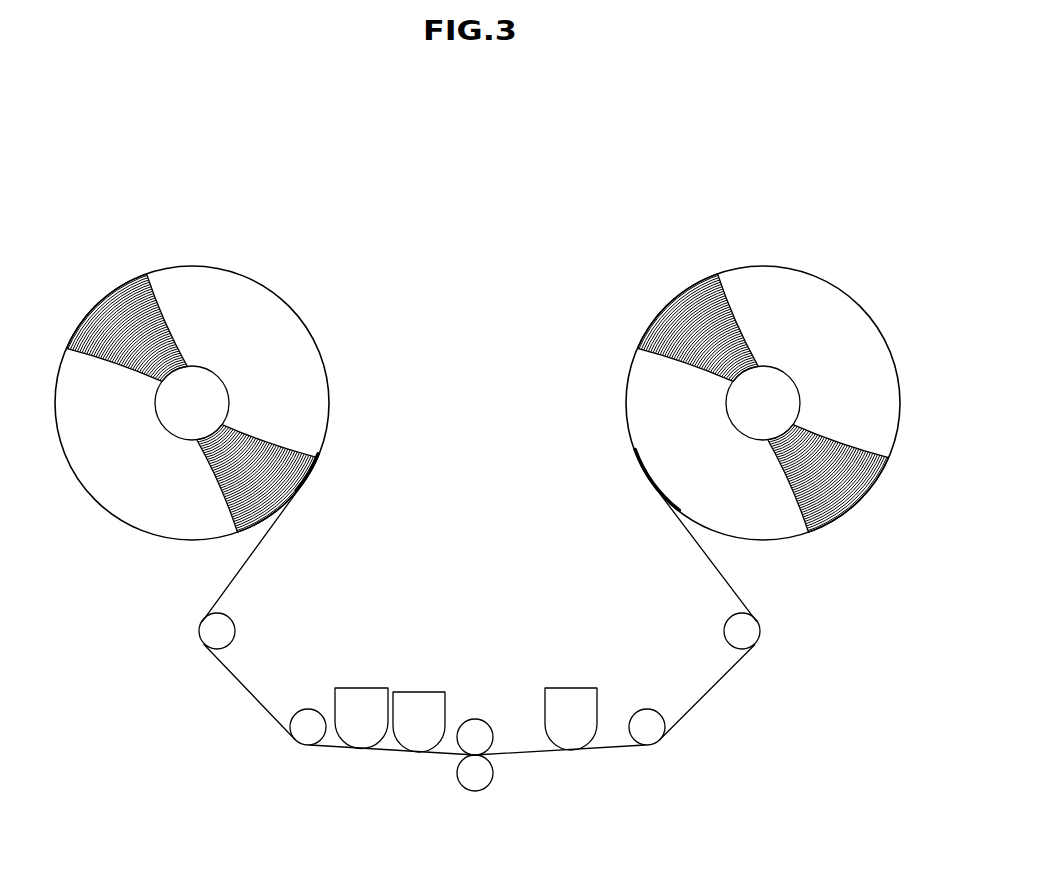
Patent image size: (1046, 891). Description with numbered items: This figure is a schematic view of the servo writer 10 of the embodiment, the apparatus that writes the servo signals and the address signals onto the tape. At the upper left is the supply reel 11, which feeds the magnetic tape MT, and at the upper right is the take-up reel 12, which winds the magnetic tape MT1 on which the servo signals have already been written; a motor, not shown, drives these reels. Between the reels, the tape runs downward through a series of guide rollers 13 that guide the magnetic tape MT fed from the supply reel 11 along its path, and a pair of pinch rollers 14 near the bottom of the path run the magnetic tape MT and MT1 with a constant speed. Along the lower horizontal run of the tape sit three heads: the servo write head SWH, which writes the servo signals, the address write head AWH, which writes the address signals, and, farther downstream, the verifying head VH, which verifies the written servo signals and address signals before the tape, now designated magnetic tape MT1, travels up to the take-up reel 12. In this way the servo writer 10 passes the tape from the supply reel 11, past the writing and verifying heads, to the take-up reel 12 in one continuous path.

The servo writer 10 is at (463, 263).
The supply reel 11 is at (192, 402).
The take-up reel 12 is at (763, 402).
The guide rollers 13 is at (207, 632).
The pinch rollers 14 is at (473, 773).
The magnetic tape MT is at (237, 575).
The magnetic tape MT1 is at (718, 567).
The servo write head SWH is at (358, 693).
The address write head AWH is at (430, 697).
The verifying head VH is at (572, 742).